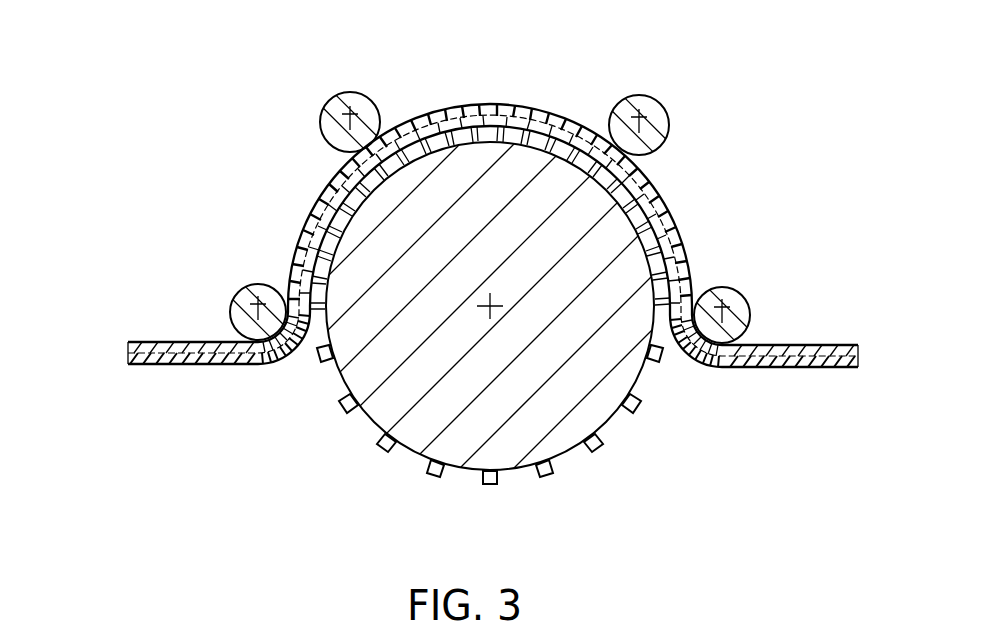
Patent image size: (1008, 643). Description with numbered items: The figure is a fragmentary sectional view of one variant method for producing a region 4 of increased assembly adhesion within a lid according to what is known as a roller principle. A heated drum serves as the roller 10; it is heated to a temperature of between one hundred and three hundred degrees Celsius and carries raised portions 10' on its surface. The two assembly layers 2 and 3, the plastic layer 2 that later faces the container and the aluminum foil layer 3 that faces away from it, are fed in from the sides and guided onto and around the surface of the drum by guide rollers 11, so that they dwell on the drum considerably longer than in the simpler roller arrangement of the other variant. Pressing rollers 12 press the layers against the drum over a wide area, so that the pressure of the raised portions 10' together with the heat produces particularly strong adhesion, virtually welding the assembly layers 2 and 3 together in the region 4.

The assembly layer 2 is at (140, 347).
The assembly layer 3 is at (172, 365).
The region of increased assembly adhesion 4 is at (782, 367).
The roller 10 is at (474, 328).
The raised portions 10' is at (506, 317).
The guide rollers 11 is at (240, 294).
The pressing rollers 12 is at (333, 115).